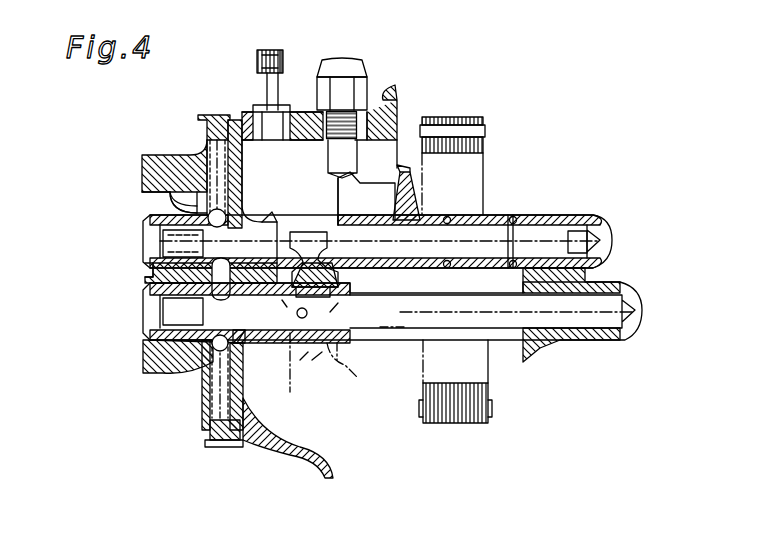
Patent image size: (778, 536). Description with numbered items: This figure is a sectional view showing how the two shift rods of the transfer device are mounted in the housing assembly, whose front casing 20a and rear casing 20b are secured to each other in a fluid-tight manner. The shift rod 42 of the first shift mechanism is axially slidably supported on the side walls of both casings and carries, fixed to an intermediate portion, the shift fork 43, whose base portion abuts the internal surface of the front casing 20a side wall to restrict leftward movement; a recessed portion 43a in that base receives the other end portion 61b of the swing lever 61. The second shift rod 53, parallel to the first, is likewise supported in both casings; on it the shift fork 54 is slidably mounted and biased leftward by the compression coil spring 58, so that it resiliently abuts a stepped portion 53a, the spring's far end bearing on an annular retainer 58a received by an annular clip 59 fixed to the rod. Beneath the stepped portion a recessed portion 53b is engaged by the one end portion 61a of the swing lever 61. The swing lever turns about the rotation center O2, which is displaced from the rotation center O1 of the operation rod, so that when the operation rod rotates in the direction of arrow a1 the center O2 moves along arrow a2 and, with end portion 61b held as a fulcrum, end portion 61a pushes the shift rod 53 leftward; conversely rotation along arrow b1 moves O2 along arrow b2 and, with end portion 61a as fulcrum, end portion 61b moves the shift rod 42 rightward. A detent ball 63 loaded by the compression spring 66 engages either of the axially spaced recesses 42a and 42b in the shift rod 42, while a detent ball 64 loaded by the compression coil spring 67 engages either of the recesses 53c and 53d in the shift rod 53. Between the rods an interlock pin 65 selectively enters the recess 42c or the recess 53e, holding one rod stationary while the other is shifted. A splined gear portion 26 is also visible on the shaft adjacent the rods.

The front casing 20a is at (298, 462).
The rear casing 20b is at (532, 357).
The gear 26 is at (478, 118).
The shift rod 42 is at (507, 322).
The recess 42a is at (237, 345).
The recess 42b is at (150, 347).
The recess 42c is at (225, 300).
The shift fork 43 is at (350, 350).
The recessed portion 43a is at (338, 362).
The shift rod 53 is at (562, 217).
The stepped portion 53a is at (330, 214).
The recessed portion 53b is at (305, 238).
The recess 53c is at (183, 243).
The recess 53d is at (262, 222).
The recess 53e is at (153, 265).
The shift fork 54 is at (420, 208).
The compression coil spring 58 is at (448, 217).
The annular retainer 58a is at (513, 217).
The annular clip 59 is at (546, 225).
The swing lever 61 is at (333, 277).
The one end portion 61a is at (323, 223).
The other end portion 61b is at (286, 369).
The detent ball 63 is at (207, 353).
The detent ball 64 is at (197, 205).
The interlock pin 65 is at (165, 283).
The compression spring 66 is at (208, 397).
The compression coil spring 67 is at (207, 152).
The axis of operation rod O1 is at (312, 347).
The pivot axis of arm portion O2 is at (387, 325).
The arrow a1 is at (324, 351).
The arrow a2 is at (287, 307).
The arrow b1 is at (299, 351).
The arrow b2 is at (332, 303).